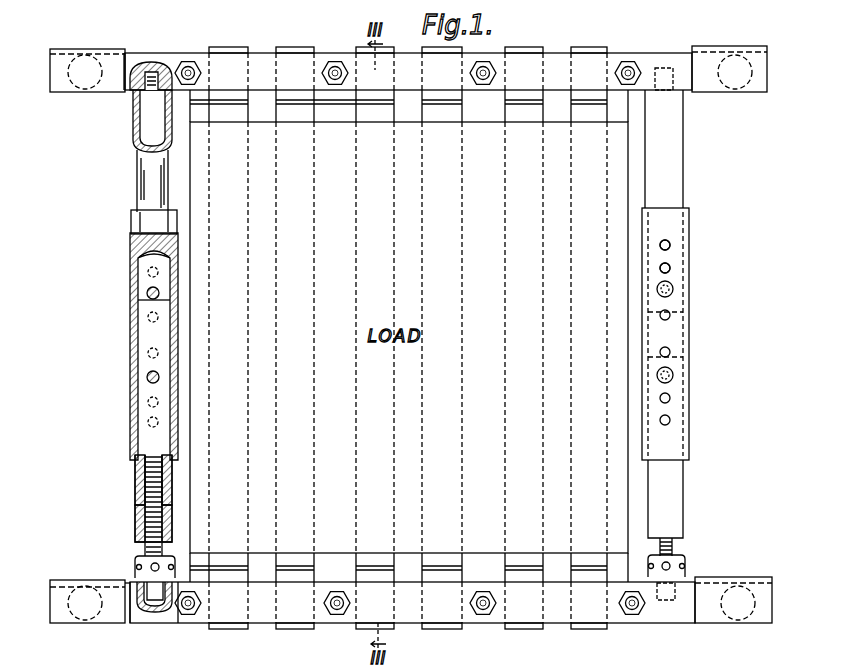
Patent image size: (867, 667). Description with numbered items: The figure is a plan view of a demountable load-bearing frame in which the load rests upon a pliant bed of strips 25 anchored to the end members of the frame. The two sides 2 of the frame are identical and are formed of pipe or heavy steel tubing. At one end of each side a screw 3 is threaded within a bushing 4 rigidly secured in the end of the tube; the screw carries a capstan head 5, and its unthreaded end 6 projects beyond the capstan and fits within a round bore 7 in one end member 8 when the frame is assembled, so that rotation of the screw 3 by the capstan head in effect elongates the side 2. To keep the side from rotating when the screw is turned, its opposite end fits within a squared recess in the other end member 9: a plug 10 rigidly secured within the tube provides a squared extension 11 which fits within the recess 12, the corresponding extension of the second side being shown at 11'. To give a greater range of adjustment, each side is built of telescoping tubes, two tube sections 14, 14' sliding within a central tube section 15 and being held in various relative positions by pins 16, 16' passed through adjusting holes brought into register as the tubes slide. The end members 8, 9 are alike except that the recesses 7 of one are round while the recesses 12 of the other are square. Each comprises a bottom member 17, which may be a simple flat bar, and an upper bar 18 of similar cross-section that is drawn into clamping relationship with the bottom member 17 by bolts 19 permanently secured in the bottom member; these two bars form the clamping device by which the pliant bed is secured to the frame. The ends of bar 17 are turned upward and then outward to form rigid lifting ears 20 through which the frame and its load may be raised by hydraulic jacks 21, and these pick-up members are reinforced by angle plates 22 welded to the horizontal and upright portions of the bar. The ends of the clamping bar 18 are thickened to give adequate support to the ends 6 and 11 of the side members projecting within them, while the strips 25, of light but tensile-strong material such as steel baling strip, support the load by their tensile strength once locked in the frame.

The side 2 is at (402, 353).
The screw 3 is at (148, 490).
The bushing 4 is at (168, 520).
The capstan head 5 is at (170, 560).
The unthreaded end 6 is at (172, 605).
The round bore 7 is at (148, 612).
The end member 8 is at (412, 616).
The end member 9 is at (408, 54).
The plug 10 is at (133, 115).
The squared extension 11 is at (140, 58).
The upper end bearing of right bar 11' is at (644, 334).
The recess 12 is at (160, 66).
The tube section 14 is at (132, 181).
The tube section 14' is at (384, 316).
The central tube section 15 is at (131, 224).
The pin 16 is at (408, 337).
The pin 16' is at (694, 289).
The bottom member 17 is at (671, 267).
The upper bar 18 is at (557, 56).
The bolts 19 is at (486, 70).
The lifting ears 20 is at (702, 92).
The hydraulic jacks 21 is at (750, 88).
The angle plates 22 is at (712, 50).
The strips 25 is at (363, 108).